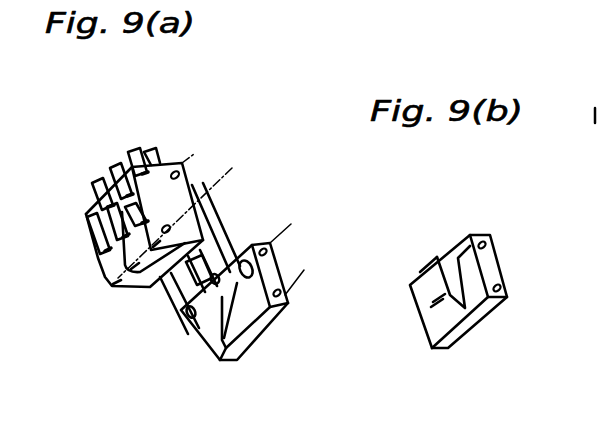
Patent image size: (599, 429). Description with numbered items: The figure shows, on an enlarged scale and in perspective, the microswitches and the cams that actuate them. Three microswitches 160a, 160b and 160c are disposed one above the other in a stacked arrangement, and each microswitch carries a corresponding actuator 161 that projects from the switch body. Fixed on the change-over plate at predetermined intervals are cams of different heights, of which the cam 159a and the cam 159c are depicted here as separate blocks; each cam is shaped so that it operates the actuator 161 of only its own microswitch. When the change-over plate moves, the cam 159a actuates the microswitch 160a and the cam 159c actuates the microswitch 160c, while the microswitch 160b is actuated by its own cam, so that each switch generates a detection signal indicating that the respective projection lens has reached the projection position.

In FIG. 9B, the cam 159a is at (441, 265).
In FIG. 9A, the cam 159c is at (205, 343).
In FIG. 9A, the microswitch 160a is at (118, 206).
In FIG. 9A, the microswitch 160b is at (129, 158).
In FIG. 9A, the microswitch 160c is at (86, 214).
In FIG. 9A, the actuator 161 is at (218, 245).